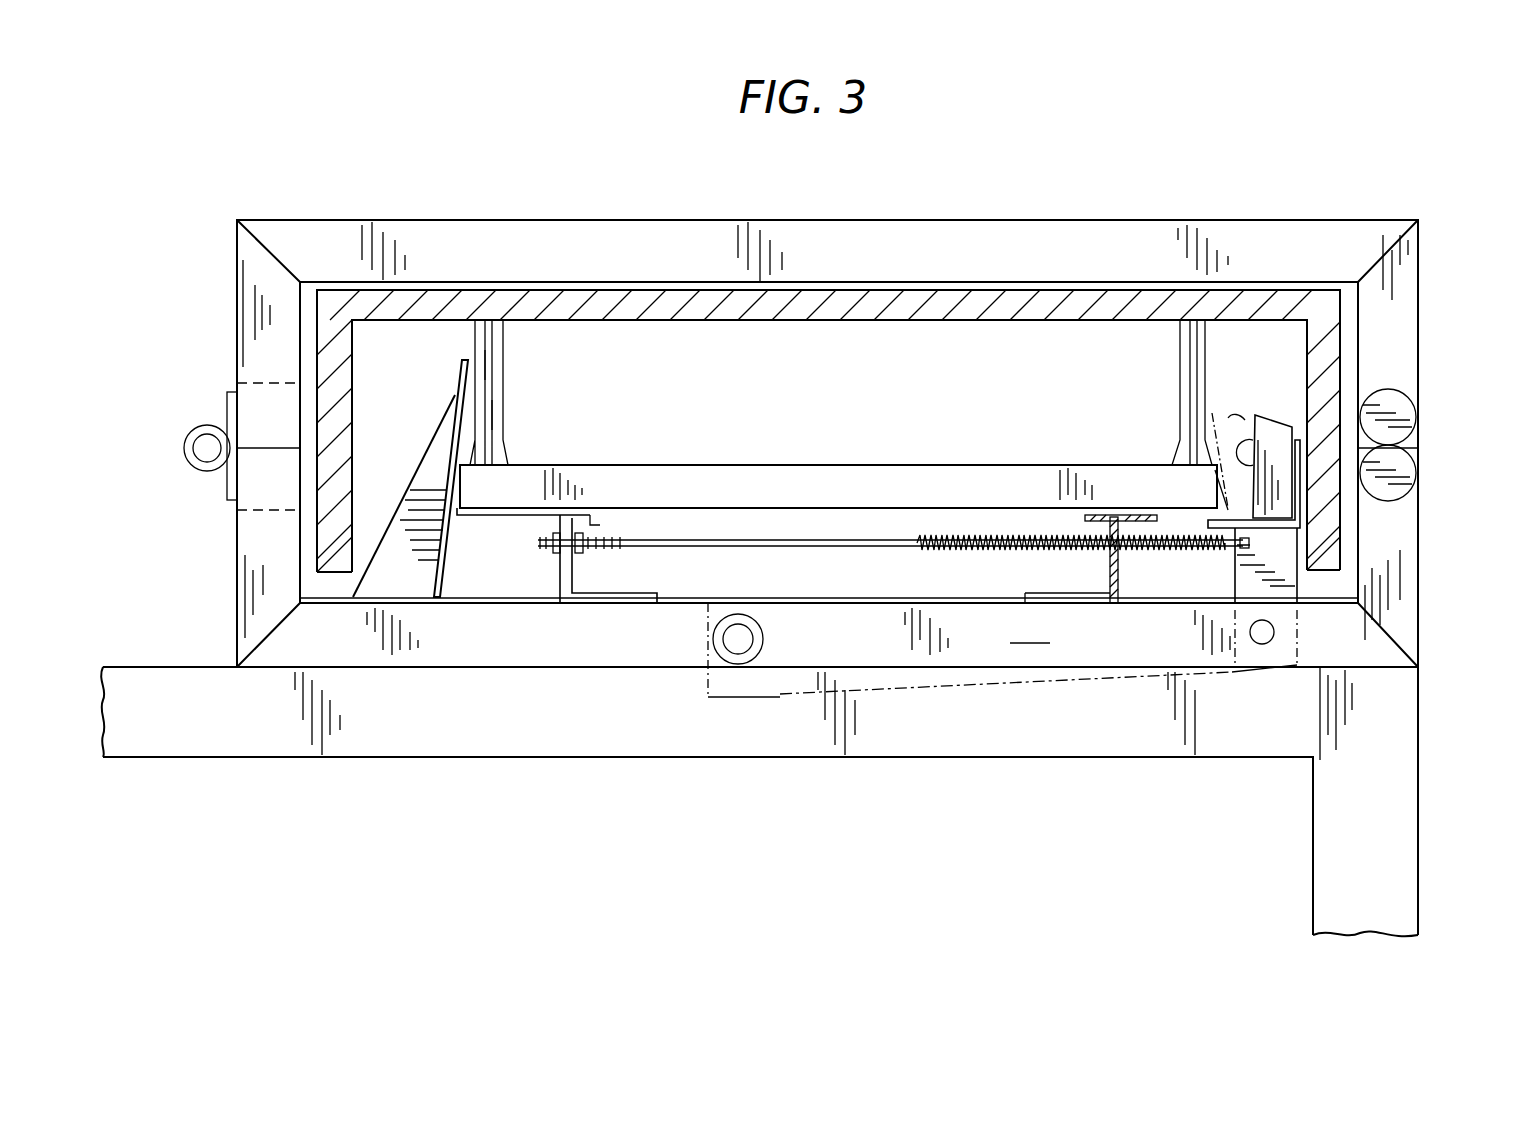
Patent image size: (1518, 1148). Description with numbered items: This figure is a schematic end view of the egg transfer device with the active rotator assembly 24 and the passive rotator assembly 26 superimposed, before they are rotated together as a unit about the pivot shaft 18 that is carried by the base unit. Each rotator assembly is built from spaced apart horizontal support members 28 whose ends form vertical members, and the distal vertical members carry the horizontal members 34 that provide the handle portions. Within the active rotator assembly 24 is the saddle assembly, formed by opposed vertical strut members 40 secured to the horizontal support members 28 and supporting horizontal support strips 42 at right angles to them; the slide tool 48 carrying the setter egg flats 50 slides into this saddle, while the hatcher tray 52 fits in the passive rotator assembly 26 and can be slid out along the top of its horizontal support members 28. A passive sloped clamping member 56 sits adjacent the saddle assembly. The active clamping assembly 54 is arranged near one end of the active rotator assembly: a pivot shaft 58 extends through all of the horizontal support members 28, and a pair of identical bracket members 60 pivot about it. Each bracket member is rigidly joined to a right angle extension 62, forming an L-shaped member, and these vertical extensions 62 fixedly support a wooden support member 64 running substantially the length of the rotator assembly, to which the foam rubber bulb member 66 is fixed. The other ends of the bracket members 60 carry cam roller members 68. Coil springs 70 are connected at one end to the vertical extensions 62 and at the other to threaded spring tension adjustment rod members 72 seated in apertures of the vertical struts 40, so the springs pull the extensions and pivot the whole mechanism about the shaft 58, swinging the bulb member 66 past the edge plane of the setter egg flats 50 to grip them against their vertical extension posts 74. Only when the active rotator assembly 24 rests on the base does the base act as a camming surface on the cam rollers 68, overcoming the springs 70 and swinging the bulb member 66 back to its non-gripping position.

The pivot shaft 18 is at (190, 432).
The active rotator assembly 24 is at (1422, 632).
The passive rotator assembly 26 is at (1427, 330).
The horizontal support members 28 is at (1030, 631).
The horizontal members 34 is at (1417, 473).
The vertical strut members 40 is at (572, 568).
The horizontal support strips 42 is at (600, 523).
The slide tool 48 is at (517, 517).
The setter egg flats 50 is at (931, 465).
The hatcher tray 52 is at (588, 300).
The active clamping assembly 54 is at (1243, 415).
The passive sloped clamping member 56 is at (430, 465).
The pivot shaft 58 is at (1274, 634).
The bracket members 60 is at (897, 685).
The right angle extensions 62 is at (1289, 565).
The wooden support member 64 is at (1273, 435).
The foam rubber bulb member 66 is at (1240, 430).
The cam roller members 68 is at (745, 645).
The coil springs 70 is at (968, 548).
The spring tension adjustment rod members 72 is at (662, 546).
The vertical extension posts 74 is at (505, 352).